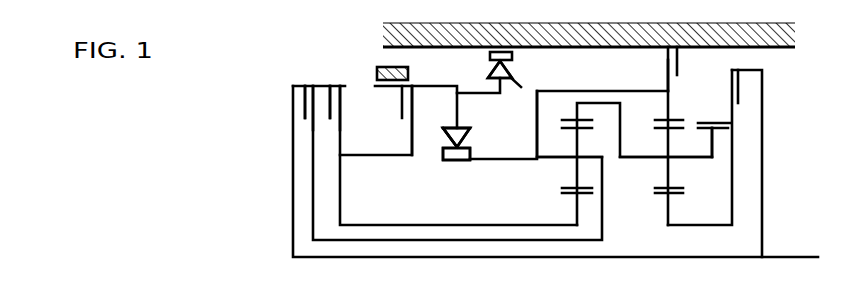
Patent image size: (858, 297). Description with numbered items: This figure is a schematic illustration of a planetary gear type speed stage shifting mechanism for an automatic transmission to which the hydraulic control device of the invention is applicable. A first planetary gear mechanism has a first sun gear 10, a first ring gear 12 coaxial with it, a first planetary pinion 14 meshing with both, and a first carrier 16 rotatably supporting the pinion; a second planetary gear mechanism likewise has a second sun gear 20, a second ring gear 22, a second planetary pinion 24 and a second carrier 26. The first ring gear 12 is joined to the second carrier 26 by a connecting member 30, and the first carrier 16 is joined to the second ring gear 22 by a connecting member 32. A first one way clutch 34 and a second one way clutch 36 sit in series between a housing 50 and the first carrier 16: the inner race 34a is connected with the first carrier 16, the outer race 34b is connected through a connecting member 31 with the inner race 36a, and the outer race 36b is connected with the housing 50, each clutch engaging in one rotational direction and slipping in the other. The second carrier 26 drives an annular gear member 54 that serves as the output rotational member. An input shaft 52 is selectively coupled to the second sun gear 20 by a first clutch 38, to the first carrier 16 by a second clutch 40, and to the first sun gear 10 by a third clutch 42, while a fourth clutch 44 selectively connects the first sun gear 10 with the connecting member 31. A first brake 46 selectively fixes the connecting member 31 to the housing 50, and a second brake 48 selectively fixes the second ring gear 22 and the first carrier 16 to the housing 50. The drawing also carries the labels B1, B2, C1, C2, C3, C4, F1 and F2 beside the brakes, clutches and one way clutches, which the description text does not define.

The first sun gear 10 is at (583, 198).
The first ring gear 12 is at (571, 118).
The first planetary pinion 14 is at (570, 128).
The first carrier 16 is at (518, 162).
The second sun gear 20 is at (662, 197).
The second ring gear 22 is at (662, 122).
The second planetary pinion 24 is at (712, 126).
The second carrier 26 is at (632, 162).
The connecting member 30 is at (601, 106).
The connecting member 31 is at (460, 101).
The connecting member 32 is at (587, 88).
The first one way clutch 34 is at (470, 139).
The inner race 34a is at (462, 162).
The outer race 34b is at (435, 143).
The second one way clutch 36 is at (487, 79).
The inner race 36a is at (518, 91).
The outer race 36b is at (513, 57).
The first clutch 38 is at (681, 136).
The second clutch 40 is at (305, 107).
The third clutch 42 is at (342, 108).
The fourth clutch 44 is at (413, 107).
The first brake 46 is at (408, 74).
The second brake 48 is at (657, 84).
The housing 50 is at (793, 34).
The input shaft 52 is at (797, 253).
The annular gear member 54 is at (715, 118).
The battery B1 is at (382, 61).
The battery B2 is at (658, 61).
The capacitor C1 is at (723, 80).
The capacitor C2 is at (306, 94).
The capacitor C3 is at (340, 94).
The capacitor C4 is at (398, 120).
The fuse F1 is at (446, 157).
The fuse F2 is at (488, 67).